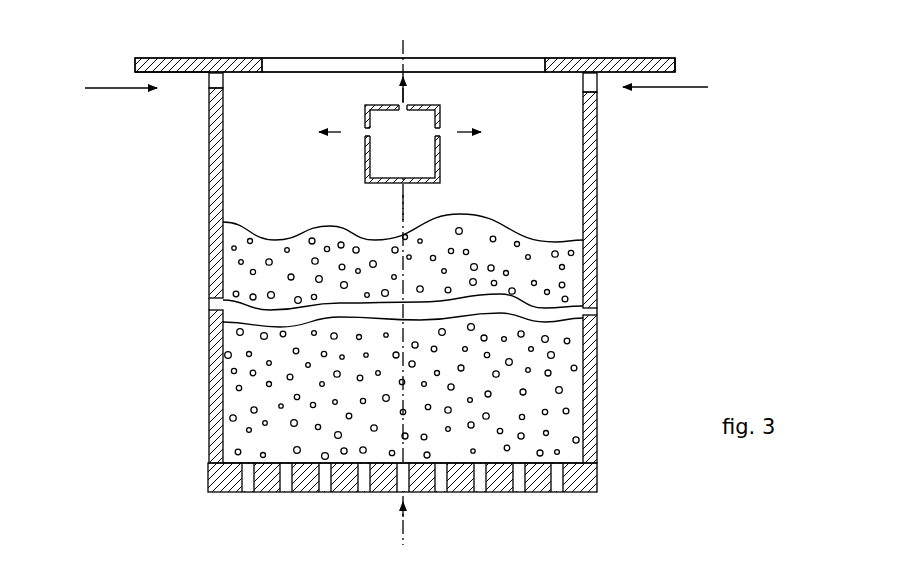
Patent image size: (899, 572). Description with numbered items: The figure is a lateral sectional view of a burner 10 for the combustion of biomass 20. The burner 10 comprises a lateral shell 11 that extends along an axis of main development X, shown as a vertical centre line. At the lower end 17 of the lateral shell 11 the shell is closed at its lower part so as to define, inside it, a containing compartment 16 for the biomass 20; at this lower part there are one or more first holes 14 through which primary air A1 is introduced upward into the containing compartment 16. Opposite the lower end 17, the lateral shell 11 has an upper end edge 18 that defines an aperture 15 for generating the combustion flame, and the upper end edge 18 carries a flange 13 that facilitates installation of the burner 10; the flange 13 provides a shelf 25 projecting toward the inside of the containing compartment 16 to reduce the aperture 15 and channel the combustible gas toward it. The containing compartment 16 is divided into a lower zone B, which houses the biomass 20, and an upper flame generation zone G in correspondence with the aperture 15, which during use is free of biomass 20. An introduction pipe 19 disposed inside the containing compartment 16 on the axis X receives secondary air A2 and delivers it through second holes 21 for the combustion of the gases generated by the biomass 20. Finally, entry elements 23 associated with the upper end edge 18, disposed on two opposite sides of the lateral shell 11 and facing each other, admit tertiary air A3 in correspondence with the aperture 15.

The burner 10 is at (102, 288).
The lateral shell 11 is at (598, 226).
The flange 13 is at (611, 60).
The first holes 14 is at (290, 478).
The aperture 15 is at (293, 61).
The containing compartment 16 is at (584, 265).
The lower end 17 is at (606, 477).
The upper end edge 18 is at (679, 65).
The introduction pipe 19 is at (449, 185).
The biomass 20 is at (243, 393).
The second holes 21 is at (401, 106).
The entry elements 23 is at (213, 87).
The shelf 25 is at (152, 72).
The primary air A1 is at (403, 528).
The secondary air A2 is at (404, 96).
The tertiary air A3 is at (117, 88).
The lower zone B is at (561, 388).
The upper flame generation zone G is at (254, 177).
The axis of main development X is at (404, 207).